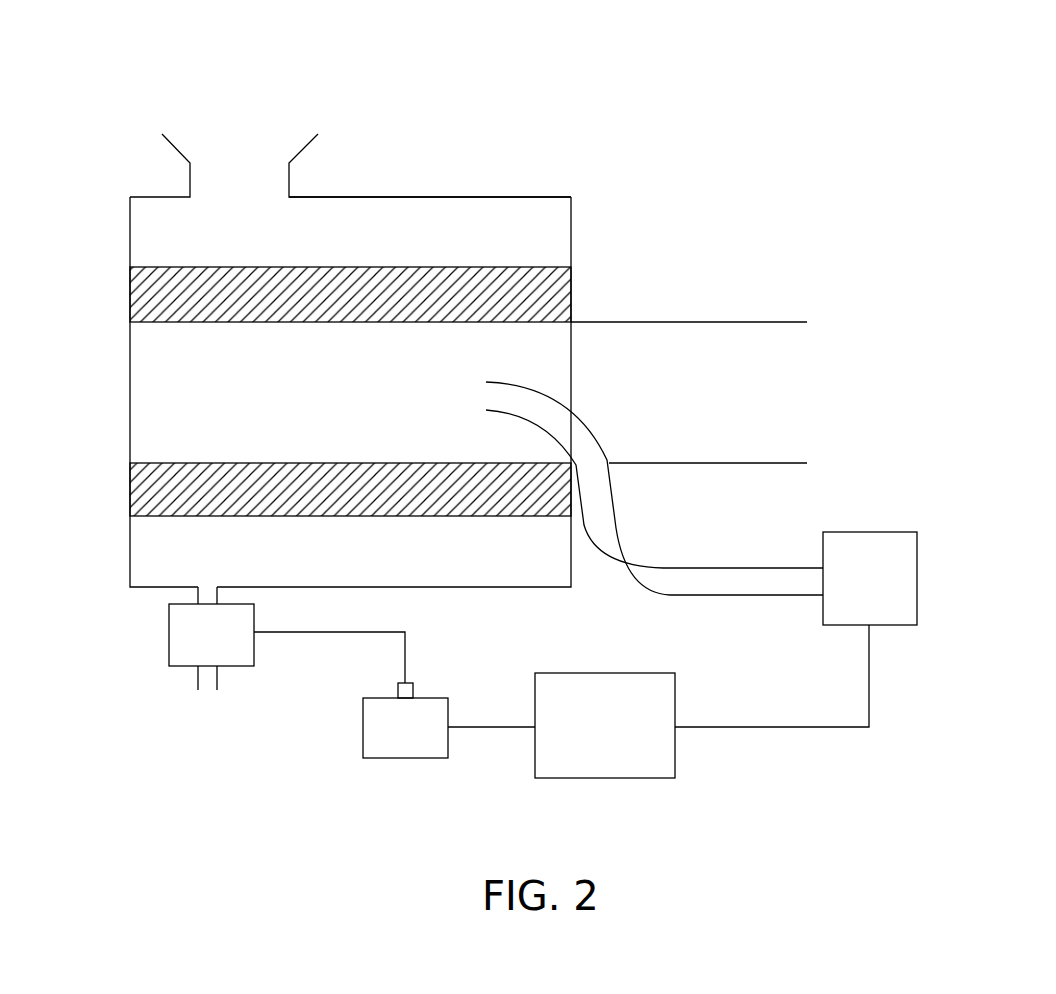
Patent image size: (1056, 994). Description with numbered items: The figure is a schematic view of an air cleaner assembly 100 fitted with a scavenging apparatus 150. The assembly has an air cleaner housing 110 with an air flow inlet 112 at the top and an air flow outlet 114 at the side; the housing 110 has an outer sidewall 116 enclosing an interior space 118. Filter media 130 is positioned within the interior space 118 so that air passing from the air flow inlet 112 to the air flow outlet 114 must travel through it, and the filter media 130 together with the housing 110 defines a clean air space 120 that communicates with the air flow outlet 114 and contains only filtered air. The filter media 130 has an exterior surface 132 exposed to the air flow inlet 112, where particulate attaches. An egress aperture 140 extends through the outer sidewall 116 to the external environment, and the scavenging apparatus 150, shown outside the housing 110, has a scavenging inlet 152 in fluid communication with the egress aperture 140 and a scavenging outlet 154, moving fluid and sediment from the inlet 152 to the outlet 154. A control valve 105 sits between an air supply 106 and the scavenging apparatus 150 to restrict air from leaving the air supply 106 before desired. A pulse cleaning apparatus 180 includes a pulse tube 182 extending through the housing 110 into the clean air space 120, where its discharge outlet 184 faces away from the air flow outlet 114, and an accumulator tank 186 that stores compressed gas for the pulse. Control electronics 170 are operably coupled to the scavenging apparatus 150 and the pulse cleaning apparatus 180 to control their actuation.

The air cleaner assembly 100 is at (575, 75).
The air cleaner housing 110 is at (539, 190).
The air flow inlet 112 is at (244, 136).
The air flow outlet 114 is at (816, 373).
The outer sidewall 116 is at (411, 196).
The interior space 118 is at (173, 232).
The clean air space 120 is at (237, 399).
The filter media 130 is at (146, 296).
The exterior surface 132 is at (535, 266).
The egress aperture 140 is at (207, 586).
The scavenging apparatus 150 is at (164, 653).
The scavenging inlet 152 is at (213, 604).
The scavenging outlet 154 is at (206, 691).
The control valve 105 is at (399, 682).
The air supply 106 is at (431, 697).
The control electronics 170 is at (615, 784).
The pulse cleaning apparatus 180 is at (933, 613).
The pulse tube 182 is at (636, 568).
The discharge outlet 184 is at (491, 393).
The accumulator tank 186 is at (872, 552).